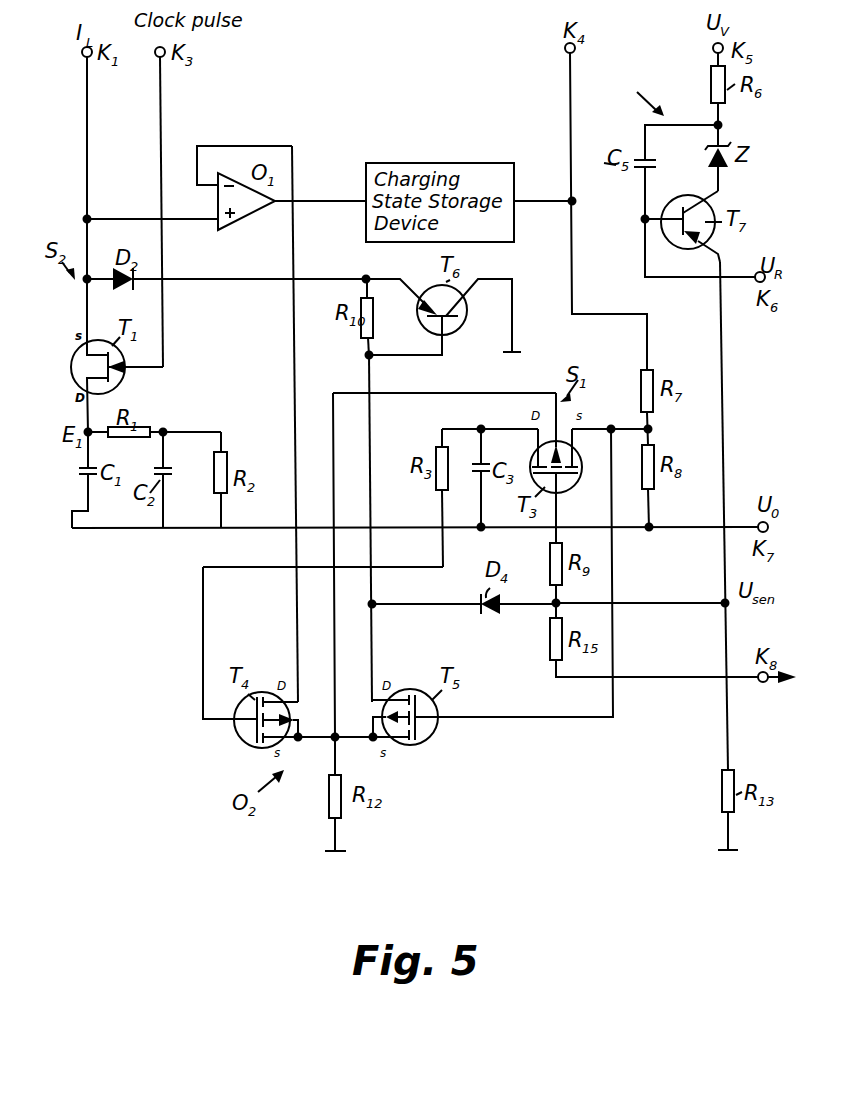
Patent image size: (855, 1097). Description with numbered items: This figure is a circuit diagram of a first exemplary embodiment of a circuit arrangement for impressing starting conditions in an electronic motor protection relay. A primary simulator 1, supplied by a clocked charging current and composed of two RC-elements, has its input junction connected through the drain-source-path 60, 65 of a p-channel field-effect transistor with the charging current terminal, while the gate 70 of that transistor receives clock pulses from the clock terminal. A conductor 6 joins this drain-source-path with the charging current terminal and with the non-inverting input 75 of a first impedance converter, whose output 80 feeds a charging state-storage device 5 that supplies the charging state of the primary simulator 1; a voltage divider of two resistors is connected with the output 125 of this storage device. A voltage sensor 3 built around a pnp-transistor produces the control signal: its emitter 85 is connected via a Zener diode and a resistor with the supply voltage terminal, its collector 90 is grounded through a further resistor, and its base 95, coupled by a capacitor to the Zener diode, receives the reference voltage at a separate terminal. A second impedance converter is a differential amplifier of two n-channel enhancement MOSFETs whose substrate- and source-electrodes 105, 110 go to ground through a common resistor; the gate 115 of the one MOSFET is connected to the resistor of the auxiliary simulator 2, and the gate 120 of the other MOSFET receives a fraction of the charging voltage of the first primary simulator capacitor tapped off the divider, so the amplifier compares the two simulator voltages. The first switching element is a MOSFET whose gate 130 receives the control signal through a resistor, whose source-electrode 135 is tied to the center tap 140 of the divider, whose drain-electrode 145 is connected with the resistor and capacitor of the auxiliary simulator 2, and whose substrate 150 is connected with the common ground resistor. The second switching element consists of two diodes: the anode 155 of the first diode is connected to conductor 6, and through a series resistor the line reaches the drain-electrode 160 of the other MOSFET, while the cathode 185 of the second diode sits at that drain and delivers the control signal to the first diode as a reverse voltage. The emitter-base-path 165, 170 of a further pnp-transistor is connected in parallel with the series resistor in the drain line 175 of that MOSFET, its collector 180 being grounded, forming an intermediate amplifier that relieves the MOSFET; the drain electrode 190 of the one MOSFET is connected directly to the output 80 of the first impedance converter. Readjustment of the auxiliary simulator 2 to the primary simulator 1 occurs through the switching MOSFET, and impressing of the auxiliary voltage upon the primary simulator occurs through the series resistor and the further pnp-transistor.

The primary simulator 1 is at (187, 428).
The auxiliary simulator 2 is at (466, 424).
The voltage sensor 3 is at (688, 165).
The charging state-storage device 5 is at (456, 163).
The conductor 6 is at (88, 243).
The drain of field-effect transistor T1 60 is at (86, 386).
The source of field-effect transistor T1 65 is at (85, 351).
The gate of field-effect transistor T1 70 is at (148, 367).
The non-inverting input of impedance converter O1 75 is at (188, 226).
The output of impedance converter O1 80 is at (277, 208).
The emitter of transistor T7 85 is at (712, 197).
The collector of transistor T7 90 is at (705, 236).
The base of transistor T7 95 is at (680, 215).
The substrate- and source-electrode of MOSFET T4 105 is at (300, 745).
The substrate- and source-electrode of MOSFET T5 110 is at (374, 745).
The gate of MOSFET T4 115 is at (240, 731).
The gate of MOSFET T5 120 is at (425, 728).
The output of charging state-storage device 125 is at (543, 205).
The gate of MOSFET T3 130 is at (563, 490).
The source-electrode of MOSFET T3 135 is at (578, 472).
The center tap of voltage divider 140 is at (645, 428).
The drain-electrode of MOSFET T3 145 is at (536, 458).
The substrate of MOSFET T3 150 is at (577, 443).
The anode of diode D2 155 is at (128, 288).
The drain-electrode of MOSFET T5 160 is at (406, 698).
The emitter of transistor T6 165 is at (410, 290).
The base of transistor T6 170 is at (445, 342).
The drain line of MOSFET T5 175 is at (373, 503).
The collector of transistor T6 180 is at (455, 307).
The cathode of diode D4 185 is at (478, 602).
The drain electrode of MOSFET T4 190 is at (264, 700).